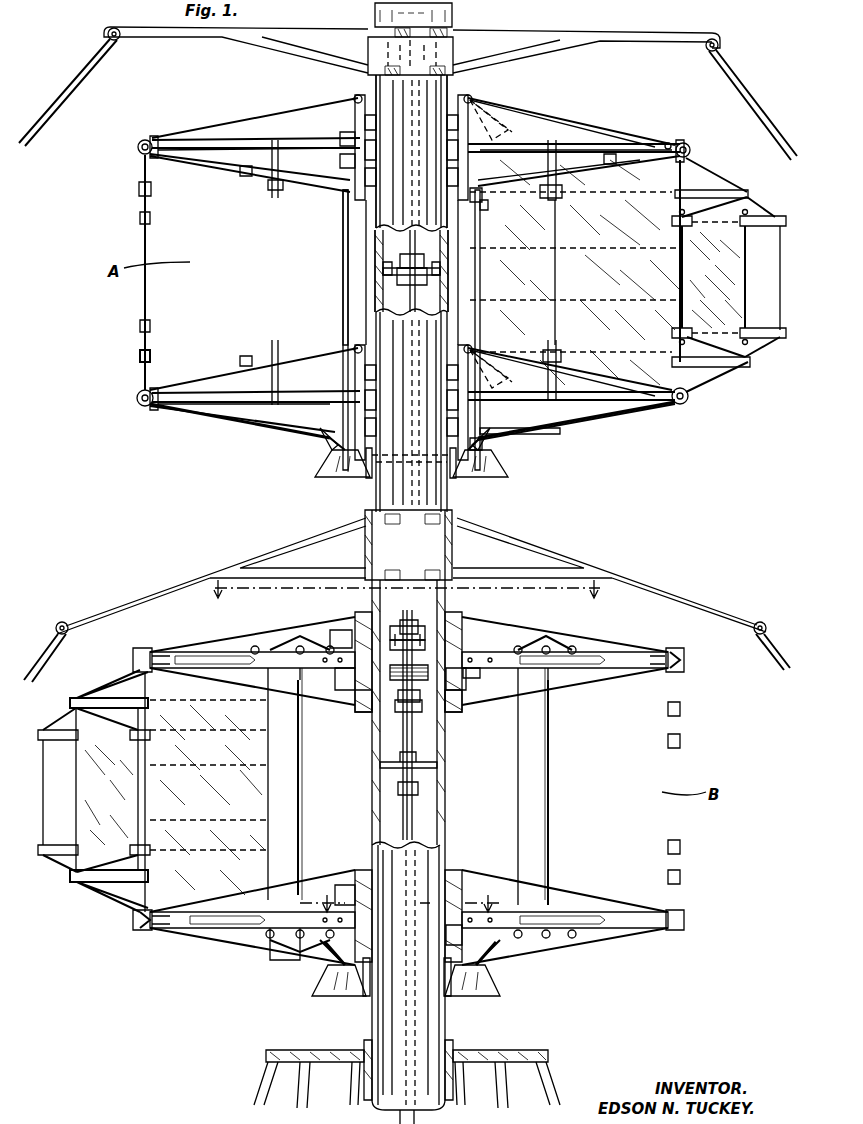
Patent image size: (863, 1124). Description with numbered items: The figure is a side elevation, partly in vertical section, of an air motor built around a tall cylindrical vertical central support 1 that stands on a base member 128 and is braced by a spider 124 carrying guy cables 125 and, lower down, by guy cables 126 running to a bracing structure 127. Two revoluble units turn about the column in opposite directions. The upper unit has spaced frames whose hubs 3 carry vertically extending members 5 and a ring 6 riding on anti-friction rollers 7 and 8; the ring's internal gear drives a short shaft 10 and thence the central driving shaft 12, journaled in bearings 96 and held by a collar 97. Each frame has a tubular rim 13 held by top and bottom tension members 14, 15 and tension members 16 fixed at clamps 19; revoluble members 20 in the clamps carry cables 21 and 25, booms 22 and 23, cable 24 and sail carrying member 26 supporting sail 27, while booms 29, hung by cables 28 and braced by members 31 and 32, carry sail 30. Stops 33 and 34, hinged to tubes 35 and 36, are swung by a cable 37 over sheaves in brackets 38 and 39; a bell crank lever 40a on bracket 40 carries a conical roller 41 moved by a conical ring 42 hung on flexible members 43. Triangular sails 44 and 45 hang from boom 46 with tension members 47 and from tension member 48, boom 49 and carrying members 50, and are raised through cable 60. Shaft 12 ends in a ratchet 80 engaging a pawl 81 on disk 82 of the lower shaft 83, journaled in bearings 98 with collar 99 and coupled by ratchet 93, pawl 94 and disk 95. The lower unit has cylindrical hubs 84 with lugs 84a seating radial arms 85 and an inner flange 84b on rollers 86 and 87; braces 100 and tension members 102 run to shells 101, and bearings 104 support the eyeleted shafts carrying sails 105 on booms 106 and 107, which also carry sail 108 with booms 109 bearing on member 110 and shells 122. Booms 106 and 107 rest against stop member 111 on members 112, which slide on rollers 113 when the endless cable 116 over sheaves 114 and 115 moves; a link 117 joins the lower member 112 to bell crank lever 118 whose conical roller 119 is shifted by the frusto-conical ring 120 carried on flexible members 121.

The vertical central support 1 is at (372, 84).
The hub 3 is at (459, 222).
The vertically extending members 5 is at (356, 123).
The ring 6 is at (356, 160).
The anti-friction rollers 7 is at (368, 172).
The anti-friction rollers 8 is at (356, 138).
The short shaft 10 is at (404, 900).
The driving shaft 12 is at (375, 286).
The rim 13 is at (692, 150).
The top tension members 14 is at (242, 124).
The bottom tension members 15 is at (232, 168).
The tension members 16 is at (214, 142).
The clamp or clevis 19 is at (140, 150).
The revoluble headed member 20 is at (150, 140).
The tension members or cables 21 is at (700, 176).
The sail boom member 22 is at (150, 192).
The sail boom member 23 is at (150, 355).
The cable or tension member 24 is at (680, 240).
The tension members 25 is at (143, 176).
The sail carrying member 26 is at (558, 263).
The sail member 27 is at (590, 272).
The cross bar 28 is at (772, 220).
The booms 29 is at (150, 218).
The sail member 30 is at (740, 266).
The top and bottom members 31 is at (140, 212).
The side members 32 is at (148, 293).
The stop 33 is at (277, 196).
The stop 34 is at (275, 340).
The tube 35 is at (275, 140).
The tube 36 is at (272, 412).
The flexible member or cable 37 is at (345, 292).
The brackets 38 is at (482, 202).
The brackets 39 is at (248, 176).
The bracket 40 is at (340, 450).
The bell crank lever 40a is at (330, 442).
The conical roller 41 is at (345, 476).
The conical ring 42 is at (366, 480).
The flexible members 43 is at (372, 452).
The sail 44 is at (590, 130).
The sail 45 is at (525, 437).
The boom 46 is at (490, 120).
The tension members 47 is at (668, 145).
The tension member 48 is at (213, 154).
The boom 49 is at (500, 212).
The sail carrying members 50 is at (559, 165).
The flexible member or cable 60 is at (356, 100).
The ratchet member 80 is at (418, 626).
The pawl 81 is at (390, 626).
The disk 82 is at (462, 622).
The shaft 83 is at (404, 734).
The hub 84 is at (466, 635).
The lugs 84a is at (478, 672).
The inner flange 84b is at (352, 652).
The radial arms 85 is at (222, 652).
The rollers 86 is at (452, 700).
The rollers 87 is at (466, 655).
The ratchet portion 93 is at (418, 692).
The pawl 94 is at (372, 690).
The disk 95 is at (395, 700).
The bearings 96 is at (383, 262).
The collar 97 is at (416, 254).
The bearings 98 is at (398, 788).
The collar 99 is at (414, 758).
The tension members or braces 100 is at (270, 642).
The bracket or shell 101 is at (140, 655).
The tension members 102 is at (168, 652).
The anti-friction bearings 104 is at (682, 652).
The sail members 105 is at (209, 797).
The boom 106 is at (90, 698).
The boom 107 is at (105, 882).
The sail member 108 is at (107, 789).
The booms 109 is at (74, 740).
The member 110 is at (148, 748).
The tension member 111 is at (302, 818).
The members 112 is at (268, 672).
The rollers 113 is at (300, 638).
The sheaves 114 is at (255, 646).
The sheave 115 is at (296, 700).
The endless cable 116 is at (290, 768).
The link 117 is at (315, 952).
The bell crank lever 118 is at (322, 978).
The conical roller 119 is at (335, 992).
The frusto-conical ring 120 is at (367, 998).
The flexible members 121 is at (440, 948).
The brackets or shells 122 is at (42, 735).
The spider 124 is at (548, 35).
The guy cables 125 is at (80, 88).
The guy cables 126 is at (58, 636).
The spider or bracing structure 127 is at (608, 572).
The base member 128 is at (282, 1050).